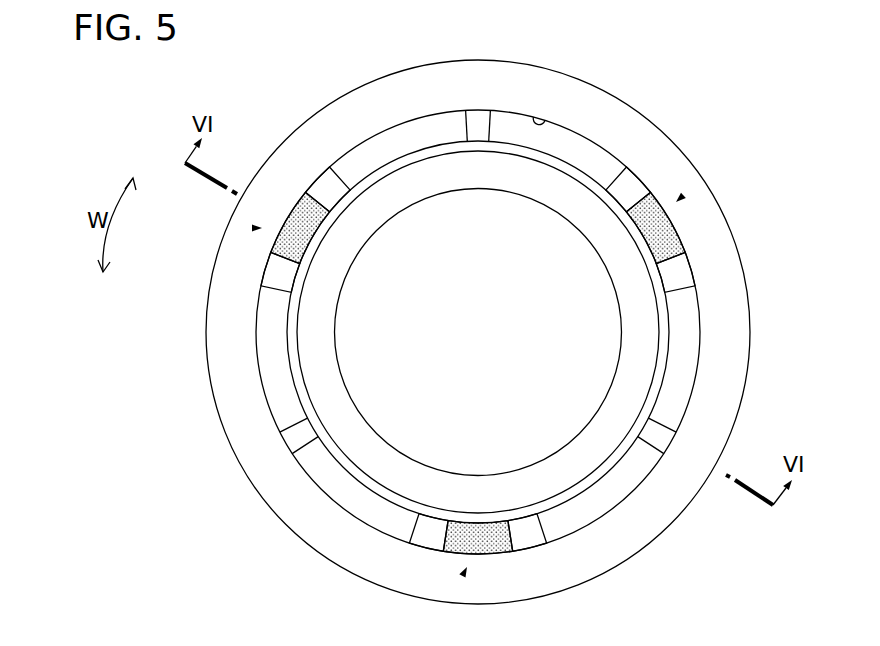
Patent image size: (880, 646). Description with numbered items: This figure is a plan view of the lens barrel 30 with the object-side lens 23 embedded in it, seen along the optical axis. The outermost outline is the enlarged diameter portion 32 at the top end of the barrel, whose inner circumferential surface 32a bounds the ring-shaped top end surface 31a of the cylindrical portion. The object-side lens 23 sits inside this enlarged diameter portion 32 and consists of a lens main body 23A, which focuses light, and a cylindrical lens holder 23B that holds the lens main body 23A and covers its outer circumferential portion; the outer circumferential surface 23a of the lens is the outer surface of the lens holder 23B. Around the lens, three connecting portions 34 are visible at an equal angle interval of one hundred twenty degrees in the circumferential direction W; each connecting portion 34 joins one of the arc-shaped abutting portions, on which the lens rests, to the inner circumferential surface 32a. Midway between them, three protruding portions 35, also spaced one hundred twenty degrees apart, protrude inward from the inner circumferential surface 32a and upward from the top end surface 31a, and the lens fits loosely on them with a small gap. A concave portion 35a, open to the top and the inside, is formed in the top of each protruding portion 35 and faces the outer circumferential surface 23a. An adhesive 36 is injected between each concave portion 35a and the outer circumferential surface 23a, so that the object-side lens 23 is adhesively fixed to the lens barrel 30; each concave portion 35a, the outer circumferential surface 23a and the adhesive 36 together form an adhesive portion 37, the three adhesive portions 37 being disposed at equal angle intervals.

The lens barrel 30 is at (299, 74).
The enlarged diameter portion 32 is at (740, 403).
The inner circumferential surface 32a is at (541, 120).
The top end surface 31a is at (372, 157).
The object-side lens 23 is at (460, 332).
The outer circumferential surface 23a is at (670, 343).
The lens main body 23A is at (355, 399).
The lens holder 23B is at (313, 372).
The connecting portion 34 is at (467, 128).
The protruding portion 35 is at (282, 297).
The concave portion 35a is at (300, 200).
The adhesive 36 is at (303, 232).
The adhesive portion 37 is at (683, 195).